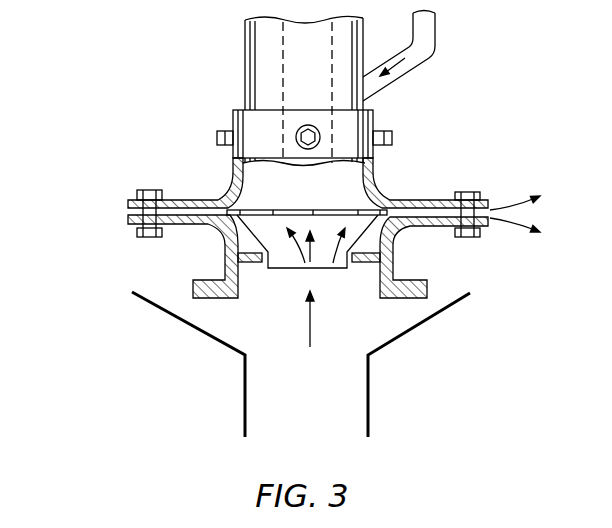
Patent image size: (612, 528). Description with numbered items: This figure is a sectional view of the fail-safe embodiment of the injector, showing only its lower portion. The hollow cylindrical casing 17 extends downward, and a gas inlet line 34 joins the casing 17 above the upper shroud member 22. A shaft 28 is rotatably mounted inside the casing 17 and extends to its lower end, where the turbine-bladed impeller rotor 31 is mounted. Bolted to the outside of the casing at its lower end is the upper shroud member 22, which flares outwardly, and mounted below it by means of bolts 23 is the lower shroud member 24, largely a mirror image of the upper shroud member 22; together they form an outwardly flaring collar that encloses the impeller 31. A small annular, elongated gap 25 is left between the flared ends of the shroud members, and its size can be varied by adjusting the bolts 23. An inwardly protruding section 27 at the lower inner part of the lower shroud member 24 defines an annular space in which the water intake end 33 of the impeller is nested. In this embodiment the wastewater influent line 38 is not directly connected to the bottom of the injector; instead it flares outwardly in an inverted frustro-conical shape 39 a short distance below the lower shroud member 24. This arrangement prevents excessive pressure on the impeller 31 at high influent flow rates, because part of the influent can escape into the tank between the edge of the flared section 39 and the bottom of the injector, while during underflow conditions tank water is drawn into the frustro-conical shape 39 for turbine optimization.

The hollow cylindrical casing 17 is at (245, 62).
The upper shroud member 22 is at (386, 186).
The bolts 23 is at (465, 192).
The lower shroud member 24 is at (400, 230).
The annular elongated gap 25 is at (128, 210).
The inwardly protruding section 27 is at (360, 262).
The shaft 28 is at (282, 31).
The turbine-bladed impeller rotor 31 is at (270, 193).
The impeller intake section 33 is at (290, 250).
The gas inlet line 34 is at (396, 78).
The wastewater influent line 38 is at (245, 408).
The inverted frustro-conical shape 39 is at (438, 313).